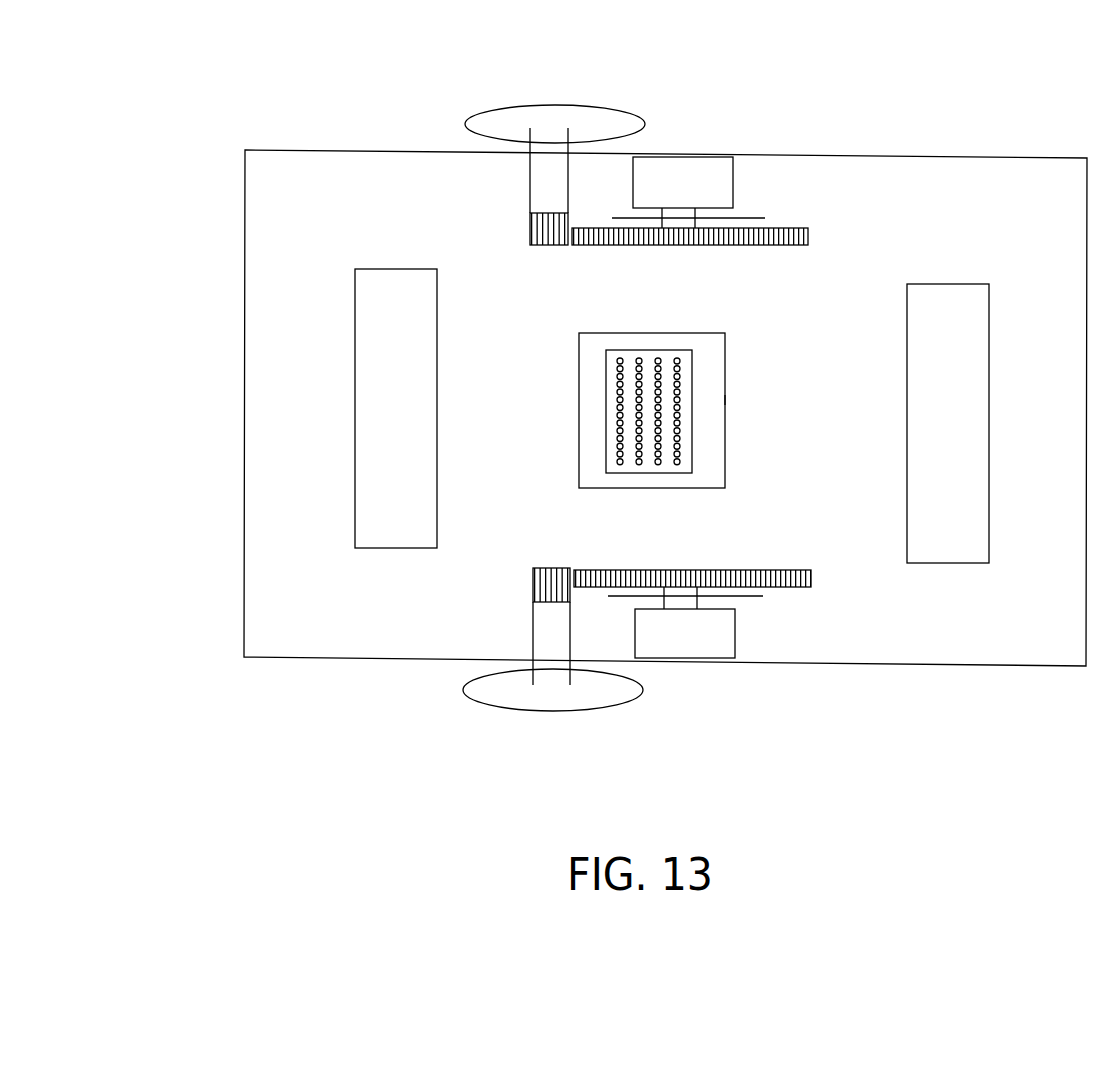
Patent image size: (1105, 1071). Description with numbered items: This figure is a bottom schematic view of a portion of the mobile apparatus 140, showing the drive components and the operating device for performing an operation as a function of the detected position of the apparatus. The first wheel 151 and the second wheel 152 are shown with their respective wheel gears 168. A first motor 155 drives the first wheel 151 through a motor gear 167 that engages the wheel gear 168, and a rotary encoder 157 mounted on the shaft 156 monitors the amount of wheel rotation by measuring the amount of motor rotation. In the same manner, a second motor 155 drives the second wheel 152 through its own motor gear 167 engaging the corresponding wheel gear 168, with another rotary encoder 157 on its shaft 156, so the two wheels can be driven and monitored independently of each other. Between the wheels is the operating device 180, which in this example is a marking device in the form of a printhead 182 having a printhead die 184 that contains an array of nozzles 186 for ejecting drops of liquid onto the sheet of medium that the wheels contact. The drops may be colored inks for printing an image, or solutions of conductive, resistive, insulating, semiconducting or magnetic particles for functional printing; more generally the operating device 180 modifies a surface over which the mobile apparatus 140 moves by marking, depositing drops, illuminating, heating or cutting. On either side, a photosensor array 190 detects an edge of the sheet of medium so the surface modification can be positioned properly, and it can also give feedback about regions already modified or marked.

The mobile apparatus 140 is at (211, 90).
The first wheel 151 is at (537, 103).
The second wheel 152 is at (502, 705).
The motor 155 is at (733, 638).
The shaft 156 is at (700, 215).
The rotary encoder 157 is at (753, 598).
The motor gear 167 is at (808, 236).
The wheel gear 168 is at (528, 225).
The operating device 180 is at (685, 401).
The printhead 182 is at (725, 390).
The printhead die 184 is at (606, 402).
The nozzles 186 is at (619, 353).
The photosensor array 190 is at (355, 432).